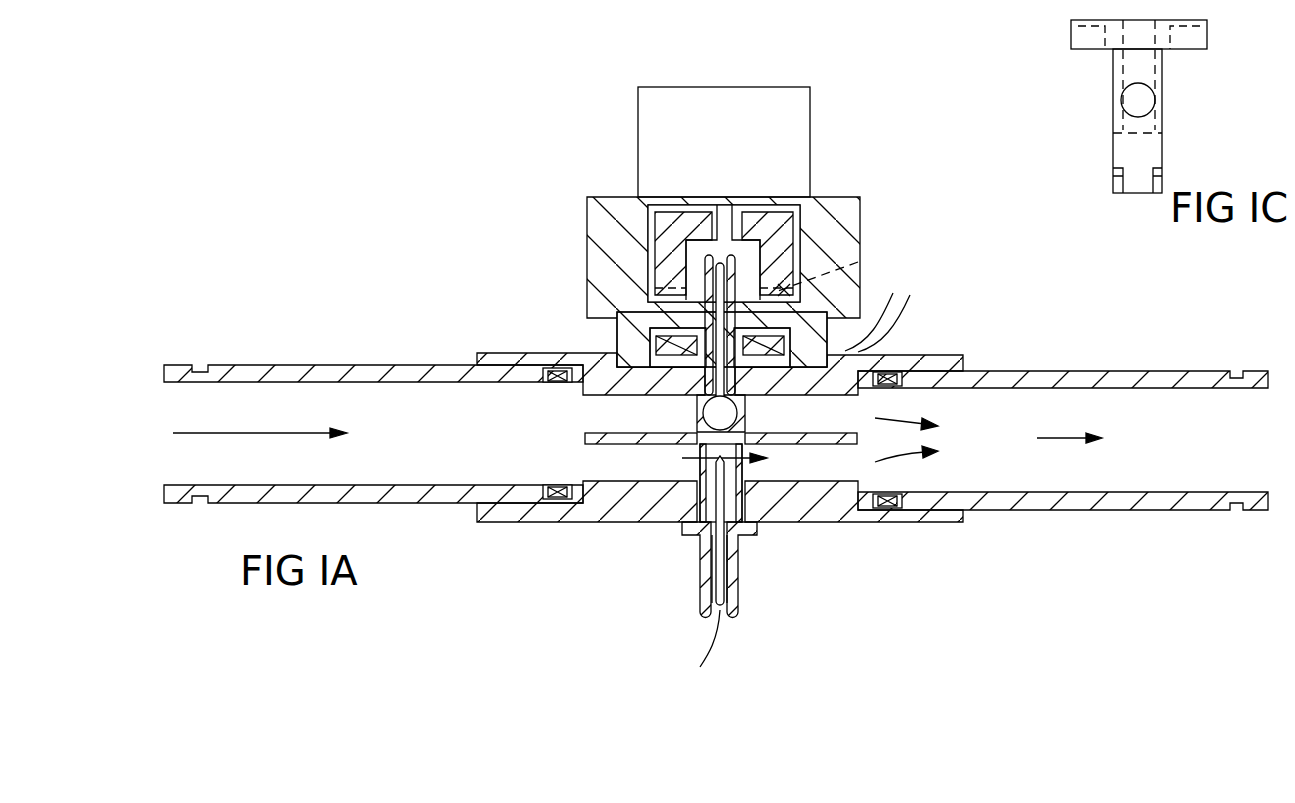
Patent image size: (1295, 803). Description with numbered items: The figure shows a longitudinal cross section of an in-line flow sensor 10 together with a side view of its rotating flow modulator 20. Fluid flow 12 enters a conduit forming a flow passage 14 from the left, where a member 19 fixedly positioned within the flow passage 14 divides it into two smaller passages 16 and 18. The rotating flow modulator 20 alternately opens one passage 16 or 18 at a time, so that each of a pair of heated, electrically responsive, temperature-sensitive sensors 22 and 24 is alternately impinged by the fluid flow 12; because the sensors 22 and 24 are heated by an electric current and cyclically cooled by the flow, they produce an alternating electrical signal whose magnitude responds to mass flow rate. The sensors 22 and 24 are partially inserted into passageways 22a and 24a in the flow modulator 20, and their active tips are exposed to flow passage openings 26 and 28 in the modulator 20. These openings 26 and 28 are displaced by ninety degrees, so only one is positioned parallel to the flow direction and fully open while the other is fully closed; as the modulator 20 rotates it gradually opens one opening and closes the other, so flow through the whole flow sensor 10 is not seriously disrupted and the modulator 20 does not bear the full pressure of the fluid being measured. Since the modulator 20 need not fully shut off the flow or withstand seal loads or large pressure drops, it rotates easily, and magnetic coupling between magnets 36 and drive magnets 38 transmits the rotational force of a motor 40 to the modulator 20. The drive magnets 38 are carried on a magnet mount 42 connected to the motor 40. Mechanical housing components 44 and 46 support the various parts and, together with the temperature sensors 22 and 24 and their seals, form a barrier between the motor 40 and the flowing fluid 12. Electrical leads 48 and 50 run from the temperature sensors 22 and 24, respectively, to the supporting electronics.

In FIG. 1A, the flow sensor 10 is at (556, 126).
In FIG. 1A, the fluid flow 12 is at (262, 433).
In FIG. 1A, the flow passage 14 is at (300, 372).
In FIG. 1A, the smaller passage 16 is at (643, 425).
In FIG. 1A, the smaller passage 18 is at (643, 471).
In FIG. 1A, the member 19 is at (591, 436).
In FIG. 1A, the rotating flow modulator 20 is at (655, 322).
In FIG. 1C, the rotating flow modulator 20 is at (1068, 80).
In FIG. 1A, the temperature sensor 22 is at (712, 278).
In FIG. 1C, the passageway 22a is at (1165, 75).
In FIG. 1A, the temperature sensor 24 is at (722, 567).
In FIG. 1C, the passageway 24a is at (1163, 172).
In FIG. 1A, the flow passage opening 26 is at (735, 412).
In FIG. 1A, the flow passage opening 28 is at (742, 468).
In FIG. 1C, the flow passage opening 28 is at (1150, 148).
In FIG. 1A, the magnet 36 is at (656, 345).
In FIG. 1A, the drive magnet 38 is at (858, 262).
In FIG. 1A, the motor 40 is at (708, 144).
In FIG. 1A, the magnet mount 42 is at (757, 262).
In FIG. 1A, the mechanical housing component 44 is at (611, 197).
In FIG. 1A, the mechanical housing component 46 is at (617, 320).
In FIG. 1A, the electrical lead 48 is at (903, 308).
In FIG. 1A, the electrical lead 50 is at (700, 652).